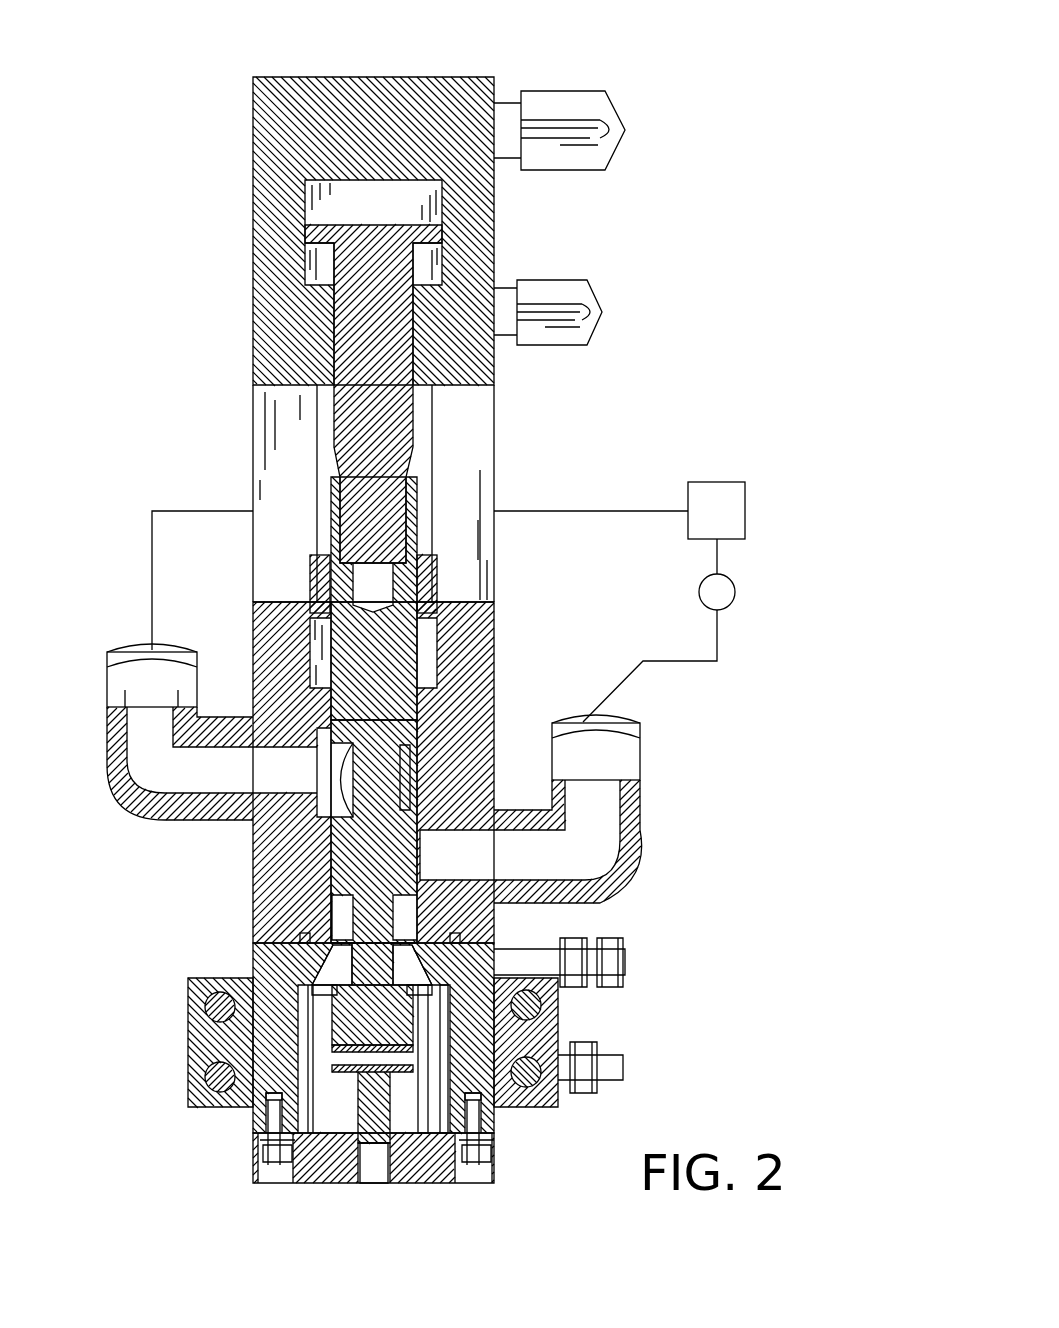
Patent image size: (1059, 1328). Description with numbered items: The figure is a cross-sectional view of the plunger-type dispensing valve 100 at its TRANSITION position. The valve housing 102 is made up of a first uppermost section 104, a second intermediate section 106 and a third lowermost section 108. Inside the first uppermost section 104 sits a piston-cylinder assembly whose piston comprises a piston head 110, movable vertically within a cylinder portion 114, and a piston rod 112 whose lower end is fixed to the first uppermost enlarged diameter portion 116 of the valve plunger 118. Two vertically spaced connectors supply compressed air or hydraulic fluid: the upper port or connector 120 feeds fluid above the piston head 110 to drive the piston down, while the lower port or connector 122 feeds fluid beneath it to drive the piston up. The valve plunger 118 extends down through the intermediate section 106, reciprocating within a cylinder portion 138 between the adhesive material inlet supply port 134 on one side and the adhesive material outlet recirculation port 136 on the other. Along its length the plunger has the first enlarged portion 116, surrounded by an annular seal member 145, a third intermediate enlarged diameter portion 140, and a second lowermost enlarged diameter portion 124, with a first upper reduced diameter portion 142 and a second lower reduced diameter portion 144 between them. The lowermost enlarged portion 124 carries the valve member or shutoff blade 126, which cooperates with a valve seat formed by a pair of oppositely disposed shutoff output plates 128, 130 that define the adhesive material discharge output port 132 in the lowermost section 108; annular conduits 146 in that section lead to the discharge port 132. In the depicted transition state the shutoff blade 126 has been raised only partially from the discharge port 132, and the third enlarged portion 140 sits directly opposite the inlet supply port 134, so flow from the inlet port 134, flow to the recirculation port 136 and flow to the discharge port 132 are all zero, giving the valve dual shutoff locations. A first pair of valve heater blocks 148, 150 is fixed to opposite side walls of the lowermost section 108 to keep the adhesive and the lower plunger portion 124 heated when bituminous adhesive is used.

The plunger-type dispensing valve 100 is at (770, 140).
The valve housing 102 is at (494, 466).
The first uppermost section 104 is at (433, 108).
The second intermediate section 106 is at (472, 698).
The third lowermost section 108 is at (472, 1075).
The piston head 110 is at (323, 230).
The piston rod 112 is at (390, 403).
The cylinder portion 114 is at (355, 195).
The first uppermost enlarged diameter portion 116 is at (387, 673).
The valve plunger 118 is at (338, 638).
The upper port or connector 120 is at (625, 130).
The lower port or connector 122 is at (602, 312).
The second lowermost enlarged diameter portion 124 is at (337, 1038).
The valve member or shutoff blade 126 is at (387, 1122).
The shutoff output plate 128 is at (317, 1175).
The shutoff output plate 130 is at (493, 1172).
The adhesive material dispensing or discharge output port 132 is at (373, 1172).
The adhesive material inlet supply port 134 is at (610, 737).
The adhesive material outlet recirculation port 136 is at (117, 670).
The cylinder portion 138 is at (393, 905).
The third intermediate enlarged diameter portion 140 is at (368, 848).
The first upper annularly configured reduced diameter portion 142 is at (385, 768).
The second lower annularly configured reduced diameter portion 144 is at (362, 973).
The annular seal member 145 is at (313, 650).
The annular conduits 146 is at (313, 1015).
The valve heater block 148 is at (188, 1060).
The valve heater block 150 is at (560, 1020).